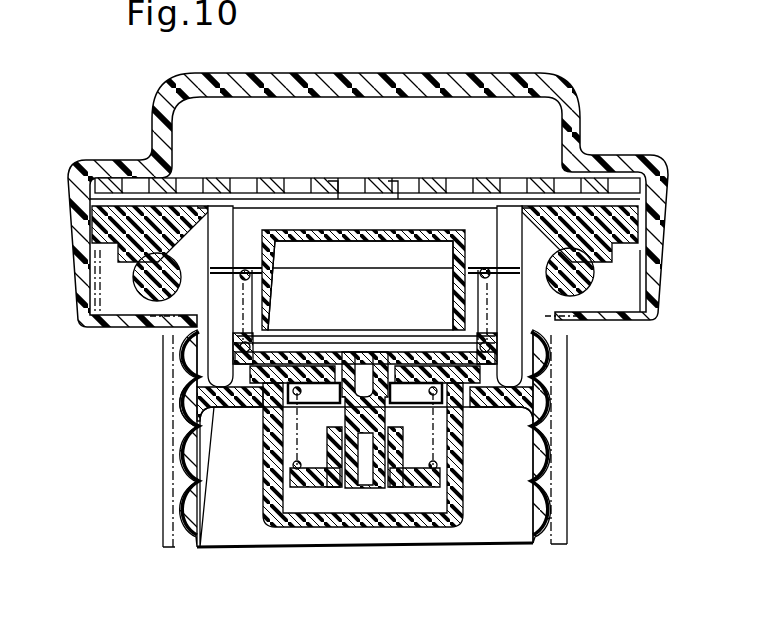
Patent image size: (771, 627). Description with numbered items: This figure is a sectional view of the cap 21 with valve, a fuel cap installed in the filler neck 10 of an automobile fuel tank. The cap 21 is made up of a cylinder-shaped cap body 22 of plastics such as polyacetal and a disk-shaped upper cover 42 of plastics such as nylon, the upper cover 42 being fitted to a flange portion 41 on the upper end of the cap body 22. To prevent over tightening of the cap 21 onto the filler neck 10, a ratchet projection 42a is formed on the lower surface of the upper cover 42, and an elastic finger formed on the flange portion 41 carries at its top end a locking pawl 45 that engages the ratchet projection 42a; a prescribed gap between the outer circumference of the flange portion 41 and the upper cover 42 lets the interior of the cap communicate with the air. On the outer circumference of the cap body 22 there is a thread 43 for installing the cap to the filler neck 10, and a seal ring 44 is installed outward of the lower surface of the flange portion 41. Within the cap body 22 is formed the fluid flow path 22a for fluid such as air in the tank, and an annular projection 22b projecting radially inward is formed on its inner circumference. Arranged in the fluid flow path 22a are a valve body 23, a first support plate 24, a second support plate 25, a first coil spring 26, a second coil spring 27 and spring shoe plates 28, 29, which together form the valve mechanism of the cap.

The filler neck 10 is at (163, 507).
The cap 21 is at (580, 44).
The cap body 22 is at (163, 330).
The fluid flow path 22a is at (370, 497).
The annular projection 22b is at (483, 395).
The valve body 23 is at (495, 368).
The first support plate 24 is at (333, 352).
The second support plate 25 is at (300, 412).
The first coil spring 26 is at (243, 265).
The second coil spring 27 is at (300, 475).
The spring shoe plate 28 is at (447, 230).
The spring shoe plate 29 is at (325, 488).
The flange portion 41 is at (628, 227).
The upper cover 42 is at (570, 128).
The ratchet projection 42a is at (222, 183).
The thread 43 is at (190, 407).
The seal ring 44 is at (190, 258).
The locking pawl 45 is at (333, 192).